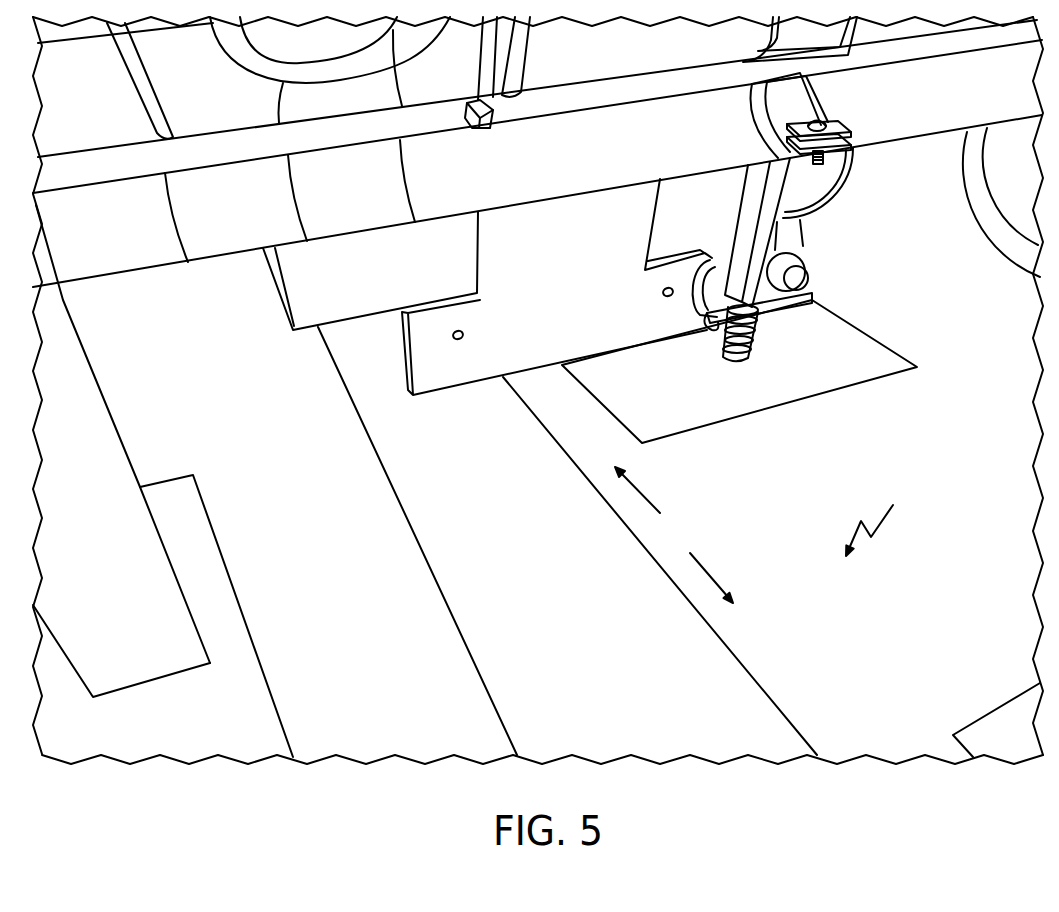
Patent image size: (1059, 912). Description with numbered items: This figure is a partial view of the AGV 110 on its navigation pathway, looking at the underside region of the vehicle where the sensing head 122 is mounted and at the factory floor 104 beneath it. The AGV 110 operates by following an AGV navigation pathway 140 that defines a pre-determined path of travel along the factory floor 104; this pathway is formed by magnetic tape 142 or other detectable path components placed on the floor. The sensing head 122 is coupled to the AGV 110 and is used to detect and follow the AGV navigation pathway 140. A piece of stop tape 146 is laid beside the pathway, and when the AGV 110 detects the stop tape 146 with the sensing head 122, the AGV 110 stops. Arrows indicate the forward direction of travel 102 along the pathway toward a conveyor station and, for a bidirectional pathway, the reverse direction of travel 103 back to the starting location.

The forward direction of travel 102 is at (707, 562).
The reverse direction of travel 103 is at (645, 500).
The factory floor 104 is at (883, 517).
The AGV 110 is at (298, 292).
The sensing head 122 is at (465, 396).
The AGV navigation pathway 140 is at (446, 562).
The magnetic tape 142 is at (735, 678).
The stop tape 146 is at (727, 398).